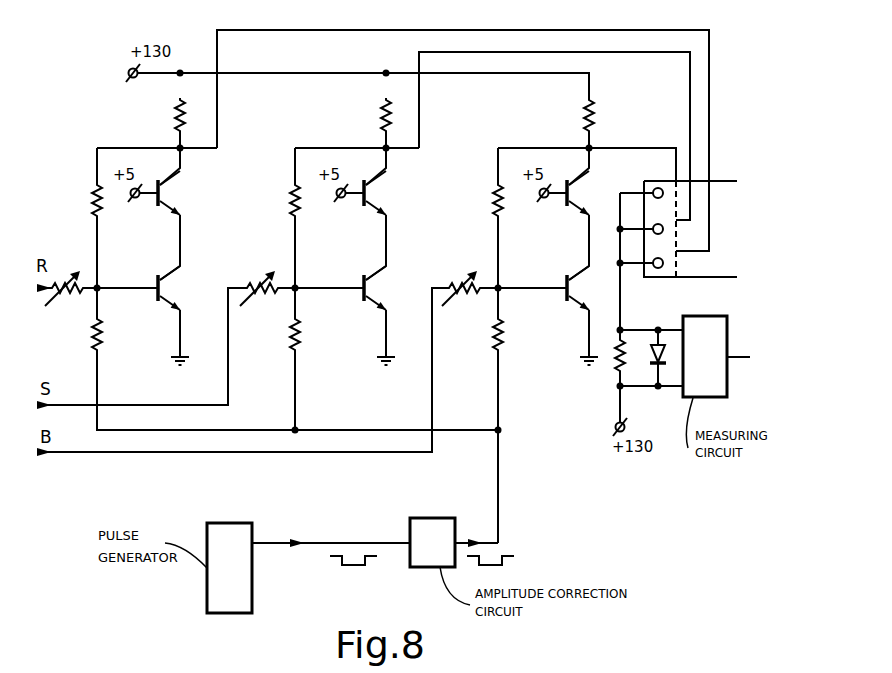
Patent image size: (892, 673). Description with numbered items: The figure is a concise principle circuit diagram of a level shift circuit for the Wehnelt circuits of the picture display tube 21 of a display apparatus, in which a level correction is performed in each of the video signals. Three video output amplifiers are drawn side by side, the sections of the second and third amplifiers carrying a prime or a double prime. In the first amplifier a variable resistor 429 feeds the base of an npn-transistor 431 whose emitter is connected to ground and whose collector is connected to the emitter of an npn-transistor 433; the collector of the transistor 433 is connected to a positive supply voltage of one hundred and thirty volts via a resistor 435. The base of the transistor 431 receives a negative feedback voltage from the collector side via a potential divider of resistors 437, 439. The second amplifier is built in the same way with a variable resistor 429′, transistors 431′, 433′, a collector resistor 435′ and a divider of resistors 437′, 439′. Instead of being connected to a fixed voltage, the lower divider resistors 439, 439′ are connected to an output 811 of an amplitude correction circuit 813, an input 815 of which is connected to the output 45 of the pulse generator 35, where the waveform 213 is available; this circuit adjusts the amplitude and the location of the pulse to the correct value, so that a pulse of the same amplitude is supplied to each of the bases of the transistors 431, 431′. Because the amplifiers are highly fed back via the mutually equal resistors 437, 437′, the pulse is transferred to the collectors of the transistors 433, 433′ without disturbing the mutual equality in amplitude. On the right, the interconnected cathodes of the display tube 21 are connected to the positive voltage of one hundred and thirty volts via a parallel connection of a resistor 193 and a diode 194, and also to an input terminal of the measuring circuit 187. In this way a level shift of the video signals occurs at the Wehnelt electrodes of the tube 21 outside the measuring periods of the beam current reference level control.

The resistor 435 is at (172, 115).
The resistor 435′ is at (378, 114).
The resistor 437 is at (93, 204).
The resistor 437′ is at (292, 205).
The resistor 439 is at (102, 340).
The resistor 439′ is at (300, 340).
The npn-transistor 433 is at (168, 194).
The npn-transistor 433′ is at (374, 194).
The npn-transistor 431 is at (168, 292).
The npn-transistor 431′ is at (374, 292).
The variable resistor 429 is at (58, 280).
The variable resistor 429′ is at (247, 280).
The display tube 21 is at (720, 189).
The resistor 193 is at (618, 366).
The diode 194 is at (668, 345).
The measuring circuit 187 is at (712, 322).
The pulse generator 35 is at (232, 522).
The output 45 is at (256, 540).
The waveform 213 is at (316, 543).
The input 815 is at (410, 542).
The amplitude correction circuit 813 is at (432, 524).
The output 811 is at (459, 543).